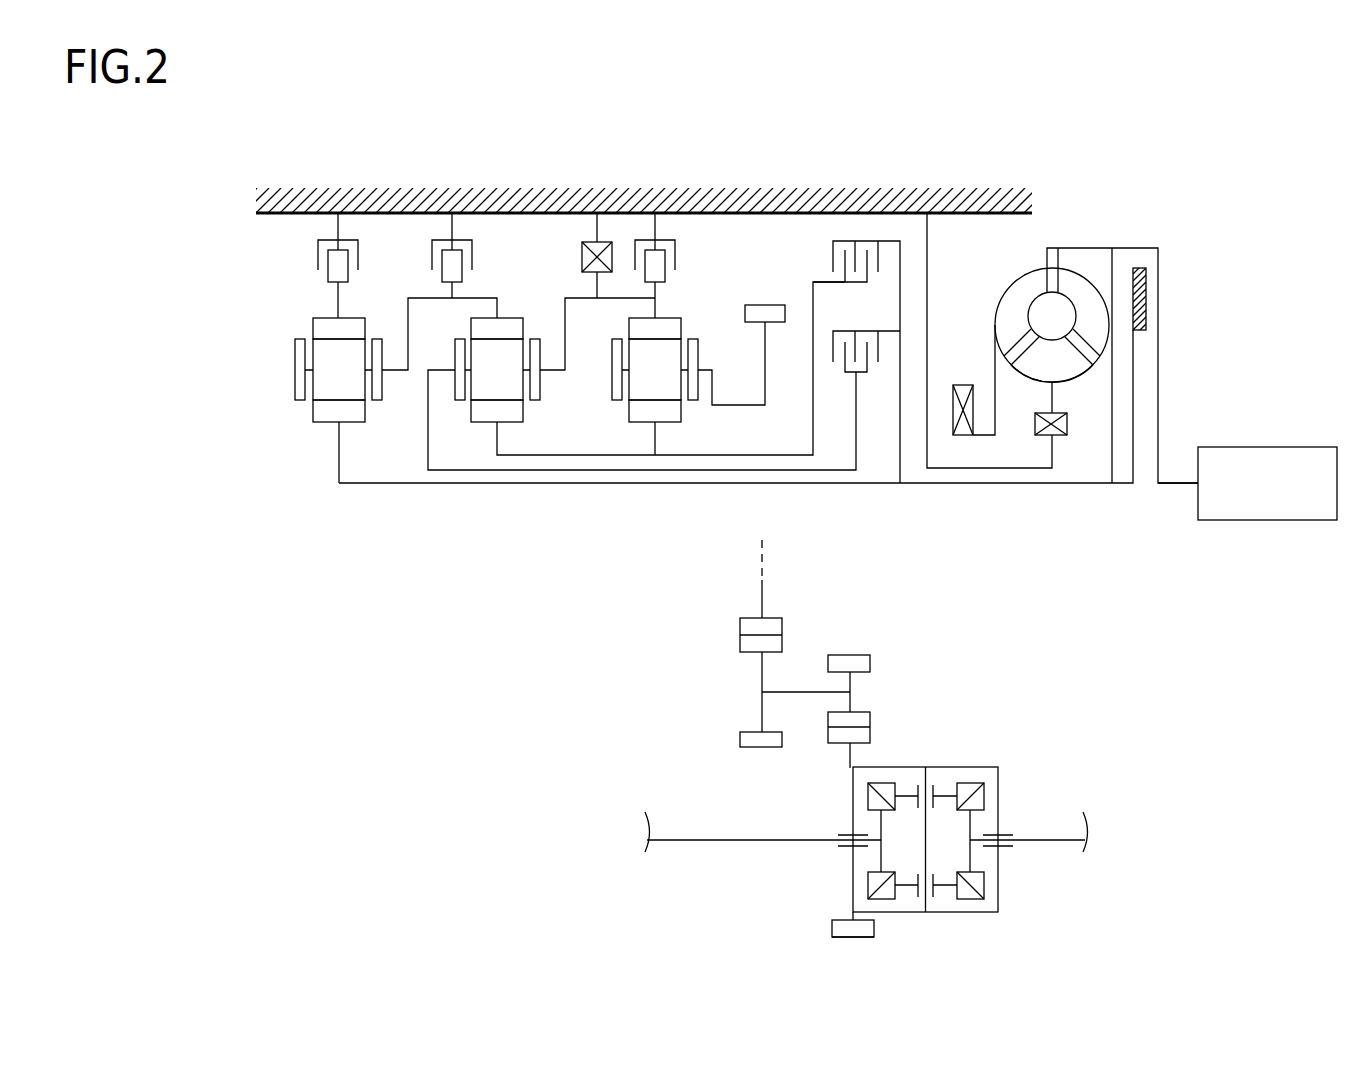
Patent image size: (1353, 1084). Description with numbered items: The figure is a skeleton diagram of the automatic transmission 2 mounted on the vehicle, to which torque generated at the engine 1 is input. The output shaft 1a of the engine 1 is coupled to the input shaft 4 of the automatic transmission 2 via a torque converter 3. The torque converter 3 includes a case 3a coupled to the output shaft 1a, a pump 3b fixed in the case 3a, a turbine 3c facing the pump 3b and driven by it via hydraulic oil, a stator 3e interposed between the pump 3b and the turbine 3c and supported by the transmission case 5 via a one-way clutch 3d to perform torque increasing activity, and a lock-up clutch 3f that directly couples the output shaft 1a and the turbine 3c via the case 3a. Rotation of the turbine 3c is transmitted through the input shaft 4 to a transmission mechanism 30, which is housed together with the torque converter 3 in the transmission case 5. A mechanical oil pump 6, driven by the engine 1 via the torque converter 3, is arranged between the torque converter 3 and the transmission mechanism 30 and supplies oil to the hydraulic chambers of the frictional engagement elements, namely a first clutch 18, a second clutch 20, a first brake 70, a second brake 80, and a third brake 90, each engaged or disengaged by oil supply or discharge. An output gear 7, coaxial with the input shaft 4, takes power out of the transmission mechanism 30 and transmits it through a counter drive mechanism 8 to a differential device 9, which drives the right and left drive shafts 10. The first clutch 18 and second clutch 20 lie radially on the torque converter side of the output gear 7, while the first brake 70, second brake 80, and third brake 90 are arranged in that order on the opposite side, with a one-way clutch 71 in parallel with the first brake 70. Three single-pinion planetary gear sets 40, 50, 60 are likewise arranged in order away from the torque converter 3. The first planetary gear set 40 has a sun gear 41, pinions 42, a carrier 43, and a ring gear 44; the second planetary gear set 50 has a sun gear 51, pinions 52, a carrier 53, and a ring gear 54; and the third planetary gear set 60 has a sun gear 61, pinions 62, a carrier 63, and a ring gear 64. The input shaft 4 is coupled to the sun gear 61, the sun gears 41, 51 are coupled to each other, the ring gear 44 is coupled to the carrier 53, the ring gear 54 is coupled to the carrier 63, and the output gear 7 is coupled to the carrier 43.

The engine 1 is at (1288, 447).
The output shaft 1a is at (1183, 482).
The automatic transmission 2 is at (866, 166).
The torque converter 3 is at (1134, 239).
The case 3a is at (1077, 248).
The pump 3b is at (1007, 287).
The turbine 3c is at (1090, 278).
The one-way clutch 3d is at (1068, 423).
The stator 3e is at (1078, 382).
The lock-up clutch 3f is at (1146, 298).
The input shaft 4 is at (978, 484).
The transmission case 5 is at (963, 200).
The oil pump 6 is at (963, 385).
The output gear 7 is at (772, 305).
The counter drive mechanism 8 is at (856, 643).
The differential device 9 is at (946, 750).
The drive shafts 10 is at (820, 840).
The first clutch 18 is at (852, 283).
The second clutch 20 is at (863, 373).
The transmission mechanism 30 is at (739, 228).
The first planetary gear set 40 is at (670, 310).
The sun gear 41 is at (648, 415).
The pinions 42 is at (642, 392).
The carrier 43 is at (613, 387).
The ring gear 44 is at (629, 327).
The second planetary gear set 50 is at (510, 310).
The sun gear 51 is at (490, 415).
The pinions 52 is at (485, 390).
The carrier 53 is at (453, 383).
The ring gear 54 is at (471, 327).
The third planetary gear set 60 is at (352, 310).
The sun gear 61 is at (332, 415).
The pinions 62 is at (328, 392).
The carrier 63 is at (295, 380).
The ring gear 64 is at (313, 327).
The first brake 70 is at (676, 258).
The one-way clutch 71 is at (582, 258).
The second brake 80 is at (474, 256).
The third brake 90 is at (364, 256).